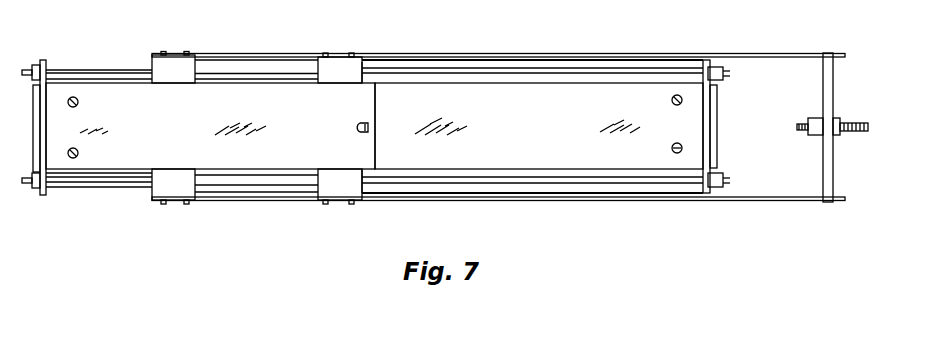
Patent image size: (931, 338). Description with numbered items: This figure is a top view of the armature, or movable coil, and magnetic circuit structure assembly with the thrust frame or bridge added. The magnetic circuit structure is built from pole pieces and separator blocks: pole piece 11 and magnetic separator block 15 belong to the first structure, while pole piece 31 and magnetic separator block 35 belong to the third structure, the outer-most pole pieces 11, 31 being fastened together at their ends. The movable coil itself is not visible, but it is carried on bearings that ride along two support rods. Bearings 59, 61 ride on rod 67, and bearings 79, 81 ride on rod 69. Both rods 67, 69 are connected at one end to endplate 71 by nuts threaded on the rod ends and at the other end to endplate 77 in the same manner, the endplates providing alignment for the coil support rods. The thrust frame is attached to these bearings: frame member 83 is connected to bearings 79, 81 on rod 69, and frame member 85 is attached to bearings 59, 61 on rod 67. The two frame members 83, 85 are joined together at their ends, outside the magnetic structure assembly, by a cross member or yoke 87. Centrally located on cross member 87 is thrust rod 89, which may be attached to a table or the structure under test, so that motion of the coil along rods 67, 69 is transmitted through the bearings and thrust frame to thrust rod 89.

The pole piece 11 is at (578, 137).
The magnetic separator block 15 is at (717, 110).
The pole piece 31 is at (166, 136).
The magnetic separator block 35 is at (32, 118).
The bearing 59 is at (352, 185).
The bearing 61 is at (157, 190).
The rod 67 is at (80, 187).
The rod 69 is at (87, 70).
The endplate 71 is at (45, 195).
The endplate 77 is at (708, 162).
The bearing 79 is at (165, 72).
The bearing 81 is at (350, 70).
The frame member 83 is at (521, 54).
The frame member 85 is at (515, 198).
The cross member or yoke 87 is at (823, 87).
The thrust rod 89 is at (797, 126).